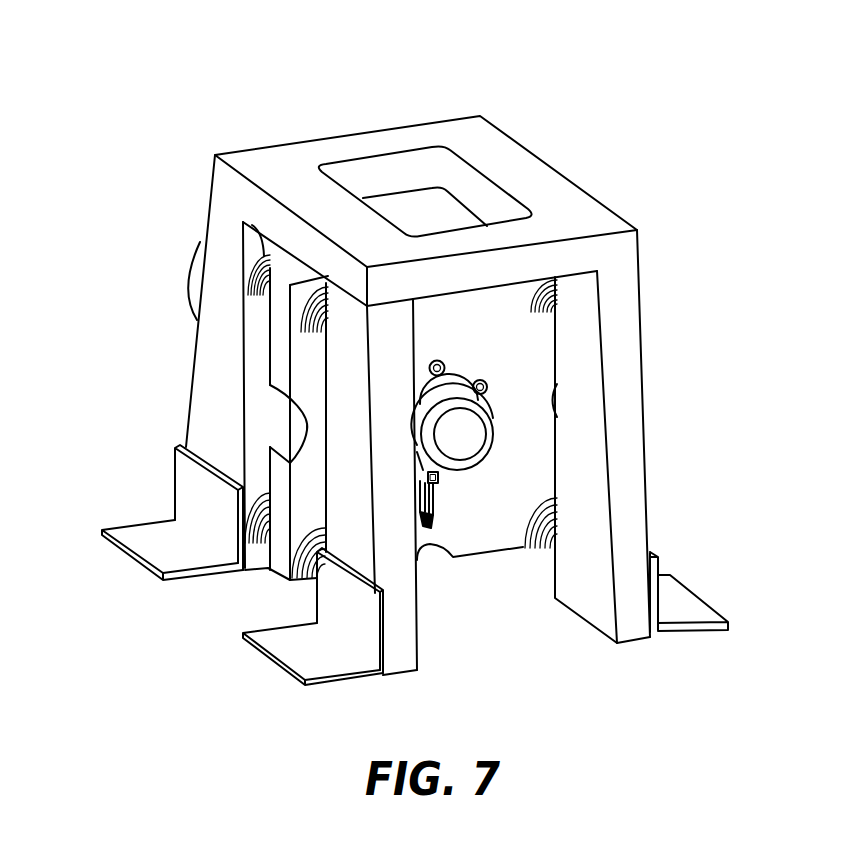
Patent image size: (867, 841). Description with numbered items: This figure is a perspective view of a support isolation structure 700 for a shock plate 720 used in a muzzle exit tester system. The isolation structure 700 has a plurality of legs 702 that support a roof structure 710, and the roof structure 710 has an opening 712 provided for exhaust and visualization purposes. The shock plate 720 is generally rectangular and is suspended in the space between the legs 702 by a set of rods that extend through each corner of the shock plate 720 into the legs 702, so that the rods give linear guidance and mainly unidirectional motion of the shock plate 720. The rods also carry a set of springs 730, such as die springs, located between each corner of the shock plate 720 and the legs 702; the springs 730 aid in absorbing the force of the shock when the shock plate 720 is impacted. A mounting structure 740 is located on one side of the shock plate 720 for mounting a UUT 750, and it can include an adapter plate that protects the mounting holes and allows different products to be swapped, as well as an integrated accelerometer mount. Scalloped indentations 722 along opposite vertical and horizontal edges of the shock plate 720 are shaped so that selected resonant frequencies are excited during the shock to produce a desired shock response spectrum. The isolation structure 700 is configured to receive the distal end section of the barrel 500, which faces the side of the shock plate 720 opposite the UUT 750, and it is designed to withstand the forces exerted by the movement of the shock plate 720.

The support isolation structure 700 is at (592, 98).
The roof structure 710 is at (278, 165).
The opening 712 is at (402, 203).
The legs 702 is at (202, 397).
The scalloped indentations 722 is at (288, 442).
The shock plate 720 is at (297, 516).
The springs 730 is at (248, 225).
The UUT 750 is at (463, 440).
The mounting structure 740 is at (447, 478).
The barrel 500 is at (190, 292).